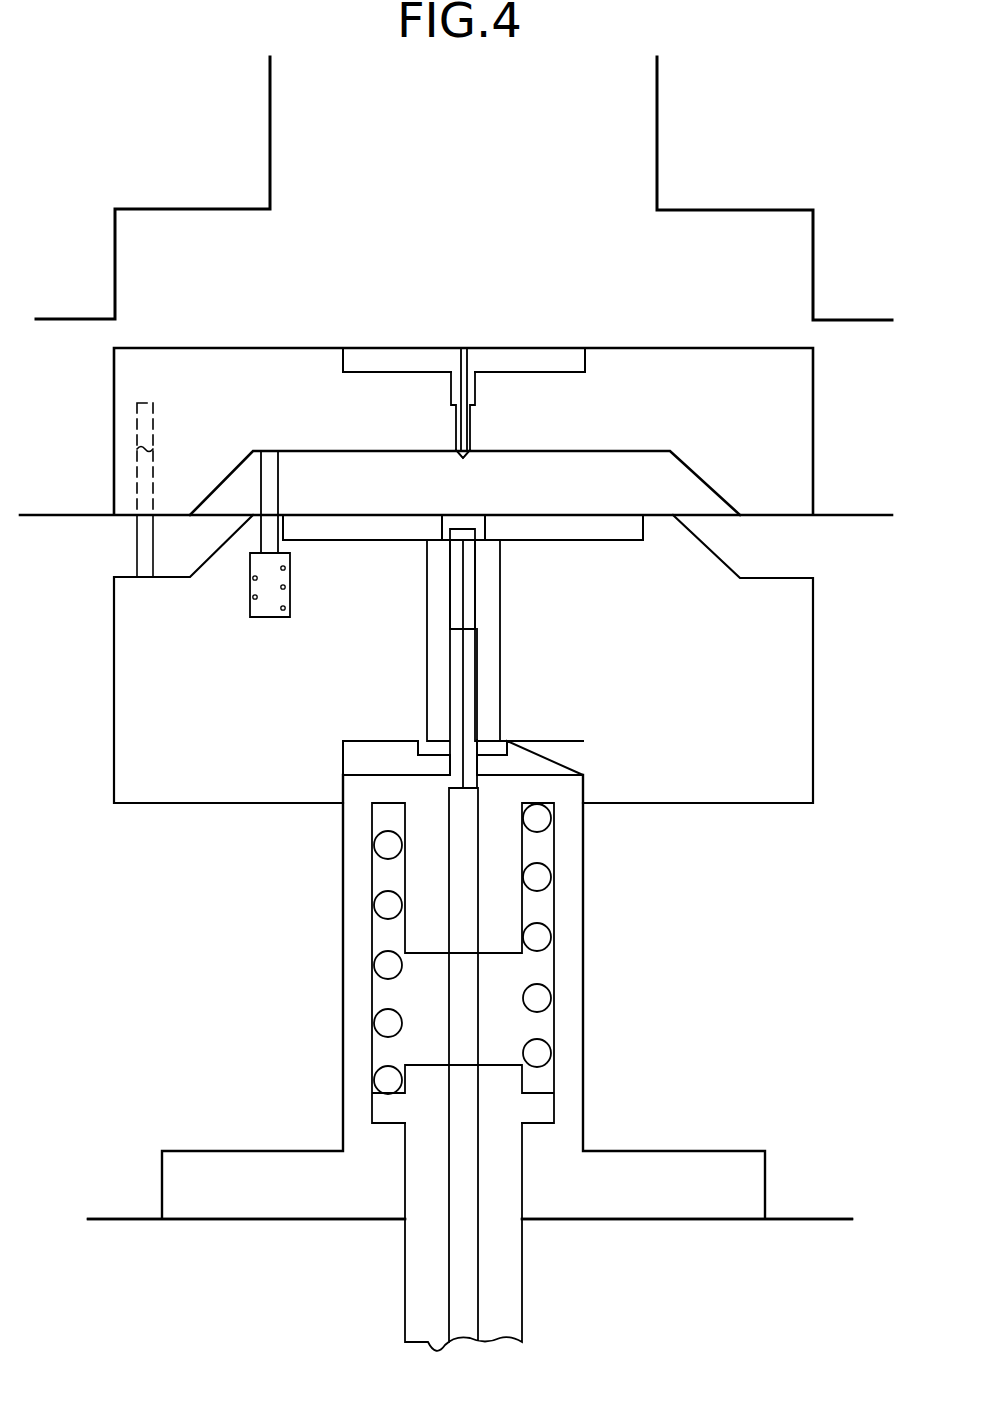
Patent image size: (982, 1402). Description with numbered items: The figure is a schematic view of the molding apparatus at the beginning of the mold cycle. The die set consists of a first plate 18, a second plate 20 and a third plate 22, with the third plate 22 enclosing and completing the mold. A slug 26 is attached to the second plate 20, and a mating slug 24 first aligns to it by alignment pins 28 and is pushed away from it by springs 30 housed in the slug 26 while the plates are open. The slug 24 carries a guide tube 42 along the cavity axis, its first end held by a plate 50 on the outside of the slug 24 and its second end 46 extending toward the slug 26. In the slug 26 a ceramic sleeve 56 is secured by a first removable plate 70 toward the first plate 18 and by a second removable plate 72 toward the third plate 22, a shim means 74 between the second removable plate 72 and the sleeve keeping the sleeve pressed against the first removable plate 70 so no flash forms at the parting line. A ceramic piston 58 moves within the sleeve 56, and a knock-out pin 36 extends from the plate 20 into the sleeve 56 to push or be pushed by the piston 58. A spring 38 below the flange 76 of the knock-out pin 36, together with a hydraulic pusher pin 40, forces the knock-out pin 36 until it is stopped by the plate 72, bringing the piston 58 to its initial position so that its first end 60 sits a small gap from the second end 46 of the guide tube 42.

The first plate 18 is at (270, 160).
The second plate 20 is at (147, 956).
The third plate 22 is at (187, 1305).
The slug 24 is at (227, 390).
The slug 26 is at (222, 698).
The alignment pins 28 is at (143, 533).
The springs 30 is at (250, 598).
The knock-out pin 36 is at (462, 845).
The spring 38 is at (387, 905).
The hydraulic pusher pin 40 is at (405, 1255).
The guide tube 42 is at (458, 438).
The second end 46 is at (464, 458).
The plate 50 is at (358, 362).
The ceramic sleeve 56 is at (438, 645).
The ceramic piston 58 is at (462, 597).
The first end 60 is at (458, 530).
The first removable plate 70 is at (557, 523).
The second removable plate 72 is at (573, 753).
The shim means 74 is at (503, 747).
The flange 76 is at (383, 805).